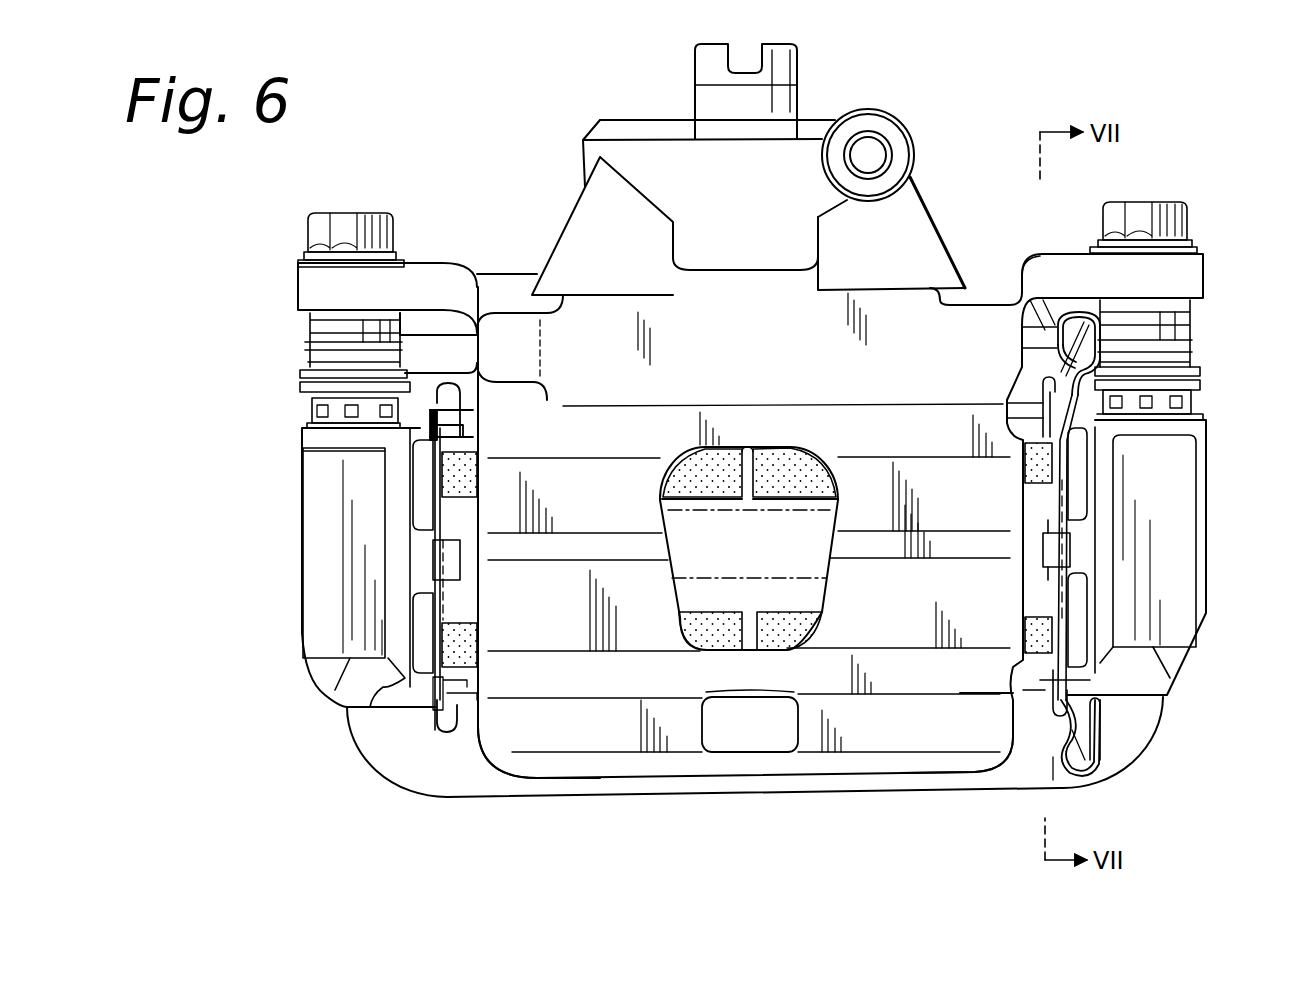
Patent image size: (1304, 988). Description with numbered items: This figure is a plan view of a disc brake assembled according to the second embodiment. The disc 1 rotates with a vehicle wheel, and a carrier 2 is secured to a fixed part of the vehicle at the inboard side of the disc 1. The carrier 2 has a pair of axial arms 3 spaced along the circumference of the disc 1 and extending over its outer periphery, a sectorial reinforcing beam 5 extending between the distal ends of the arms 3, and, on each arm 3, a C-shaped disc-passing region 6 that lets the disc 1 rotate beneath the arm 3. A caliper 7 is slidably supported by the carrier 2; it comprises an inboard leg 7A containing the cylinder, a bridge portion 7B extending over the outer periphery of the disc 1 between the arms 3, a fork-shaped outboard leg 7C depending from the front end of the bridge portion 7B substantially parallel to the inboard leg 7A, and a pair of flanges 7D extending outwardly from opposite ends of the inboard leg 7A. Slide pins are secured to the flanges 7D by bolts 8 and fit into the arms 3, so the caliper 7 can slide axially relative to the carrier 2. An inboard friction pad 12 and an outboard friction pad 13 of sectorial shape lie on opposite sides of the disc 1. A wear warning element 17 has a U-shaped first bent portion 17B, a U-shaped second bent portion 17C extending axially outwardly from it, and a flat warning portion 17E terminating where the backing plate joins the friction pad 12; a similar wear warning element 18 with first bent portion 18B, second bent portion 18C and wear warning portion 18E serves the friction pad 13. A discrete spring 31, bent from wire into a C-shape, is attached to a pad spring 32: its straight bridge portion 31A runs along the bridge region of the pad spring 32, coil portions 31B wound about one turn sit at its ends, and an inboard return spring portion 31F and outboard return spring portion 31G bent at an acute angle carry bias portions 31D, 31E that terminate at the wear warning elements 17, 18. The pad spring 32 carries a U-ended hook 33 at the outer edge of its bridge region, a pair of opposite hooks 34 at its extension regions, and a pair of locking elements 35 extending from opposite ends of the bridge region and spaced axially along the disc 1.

The disc 1 is at (747, 580).
The carrier 2 is at (298, 468).
The axial arm 3 is at (322, 553).
The sectorial reinforcing beam 5 is at (920, 775).
The disc-passing region 6 is at (700, 597).
The caliper 7 is at (938, 200).
The inboard leg 7A is at (636, 130).
The bridge portion 7B is at (637, 637).
The outboard leg 7C is at (820, 740).
The flange 7D is at (318, 288).
The bolt 8 is at (357, 212).
The inboard friction pad 12 is at (683, 478).
The outboard friction pad 13 is at (780, 630).
The wear warning element 17 is at (1190, 323).
The first bent portion 17B is at (1155, 402).
The second bent portion 17C is at (1050, 310).
The warning portion 17E is at (1200, 372).
The wear warning element 18 is at (1113, 740).
The first bent portion 18B is at (1103, 693).
The second bent portion 18C is at (1080, 770).
The wear warning portion 18E is at (1103, 717).
The spring 31 is at (1058, 510).
The bridge portion 31A is at (1063, 573).
The coil portion 31B is at (1050, 418).
The bias portion 31D is at (1080, 310).
The bias portion 31E is at (1107, 760).
The inboard return spring portion 31F is at (1050, 323).
The outboard return spring portion 31G is at (1060, 733).
The pad spring 32 is at (425, 635).
The hook 33 is at (1053, 547).
The hook 34 is at (445, 383).
The locking element 35 is at (432, 445).